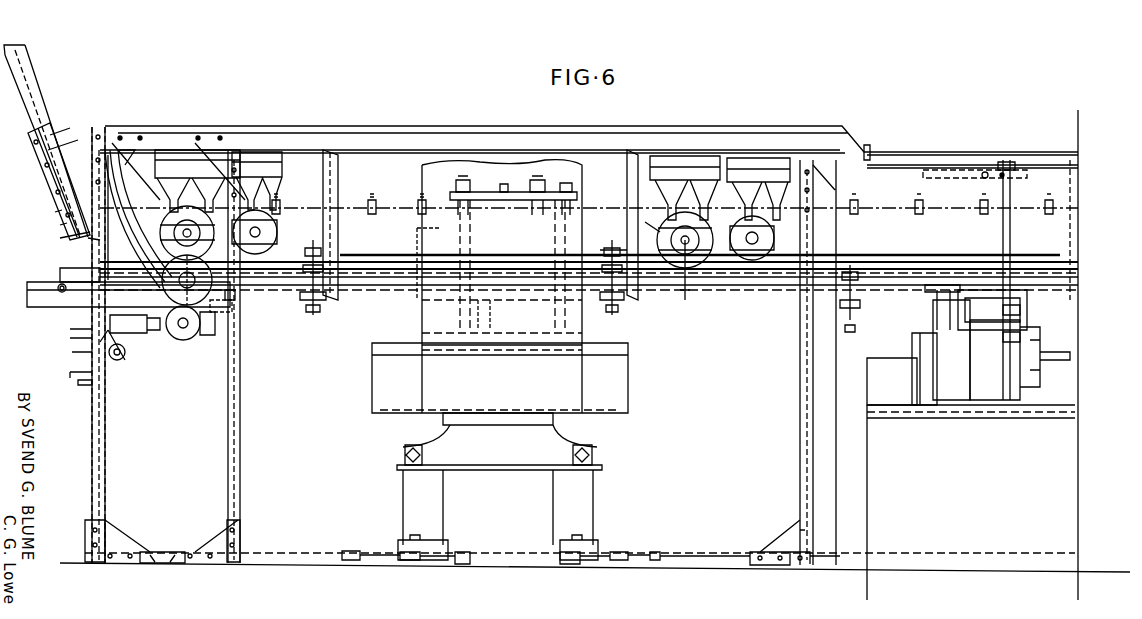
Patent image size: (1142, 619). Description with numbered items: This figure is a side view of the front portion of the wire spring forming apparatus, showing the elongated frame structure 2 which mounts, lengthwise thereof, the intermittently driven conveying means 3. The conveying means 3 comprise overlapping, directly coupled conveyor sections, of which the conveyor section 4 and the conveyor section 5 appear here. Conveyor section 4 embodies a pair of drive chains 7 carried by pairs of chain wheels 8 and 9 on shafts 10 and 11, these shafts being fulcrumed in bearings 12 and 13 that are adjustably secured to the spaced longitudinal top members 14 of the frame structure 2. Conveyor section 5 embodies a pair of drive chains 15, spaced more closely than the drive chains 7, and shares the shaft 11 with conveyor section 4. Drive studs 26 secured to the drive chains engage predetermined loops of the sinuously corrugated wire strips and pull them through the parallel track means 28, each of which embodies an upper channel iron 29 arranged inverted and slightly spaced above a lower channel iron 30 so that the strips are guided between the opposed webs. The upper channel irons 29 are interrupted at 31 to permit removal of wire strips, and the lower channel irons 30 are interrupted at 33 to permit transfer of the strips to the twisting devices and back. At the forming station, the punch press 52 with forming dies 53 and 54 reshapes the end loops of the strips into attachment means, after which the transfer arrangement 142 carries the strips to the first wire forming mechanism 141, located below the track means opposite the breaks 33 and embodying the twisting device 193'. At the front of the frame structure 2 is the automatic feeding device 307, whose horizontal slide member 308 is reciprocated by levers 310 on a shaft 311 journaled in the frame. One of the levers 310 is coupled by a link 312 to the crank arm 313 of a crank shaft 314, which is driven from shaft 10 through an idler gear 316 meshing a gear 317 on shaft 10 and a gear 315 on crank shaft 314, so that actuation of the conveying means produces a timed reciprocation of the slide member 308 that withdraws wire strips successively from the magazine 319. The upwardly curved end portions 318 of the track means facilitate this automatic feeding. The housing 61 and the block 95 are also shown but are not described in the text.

The frame structure 2 is at (292, 566).
The conveying means 3 is at (606, 204).
The conveyor section 4 is at (284, 212).
The conveyor section 5 is at (896, 214).
The drive chains 7 is at (345, 212).
The chain wheels 8 is at (198, 215).
The chain wheels 9 is at (683, 212).
The shaft 10 is at (212, 280).
The shaft 11 is at (686, 288).
The bearings 12 is at (165, 215).
The bearings 13 is at (711, 178).
The longitudinal top members 14 is at (470, 132).
The drive chains 15 is at (960, 212).
The drive studs 26 is at (378, 206).
The track means 28 is at (930, 260).
The upper channel iron 29 is at (380, 262).
The lower channel iron 30 is at (363, 280).
The interruption 31 is at (630, 302).
The interruption 33 is at (935, 292).
The punch press 52 is at (593, 500).
The forming die 53 is at (414, 224).
The forming die 54 is at (596, 258).
The motor housing 61 is at (372, 346).
The terminal block 95 is at (497, 190).
The wire forming mechanism 141 is at (1028, 302).
The transfer arrangement 142 is at (940, 390).
The twisting device 193' is at (971, 460).
The feeding device 307 is at (75, 138).
The slide member 308 is at (60, 270).
The levers 310 is at (75, 332).
The shaft 311 is at (108, 352).
The link 312 is at (135, 334).
The crank arm 313 is at (181, 340).
The crank shaft 314 is at (208, 335).
The gear 315 is at (235, 320).
The idler gear 316 is at (240, 310).
The gear 317 is at (75, 238).
The upwardly curved end portions 318 is at (150, 210).
The magazine 319 is at (40, 178).